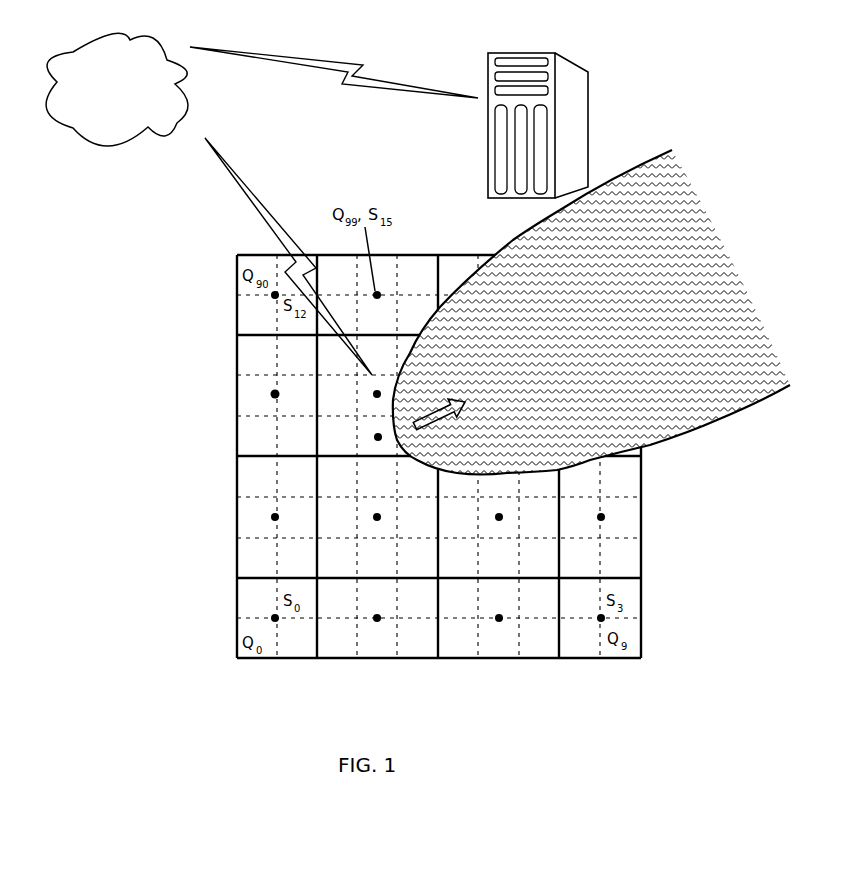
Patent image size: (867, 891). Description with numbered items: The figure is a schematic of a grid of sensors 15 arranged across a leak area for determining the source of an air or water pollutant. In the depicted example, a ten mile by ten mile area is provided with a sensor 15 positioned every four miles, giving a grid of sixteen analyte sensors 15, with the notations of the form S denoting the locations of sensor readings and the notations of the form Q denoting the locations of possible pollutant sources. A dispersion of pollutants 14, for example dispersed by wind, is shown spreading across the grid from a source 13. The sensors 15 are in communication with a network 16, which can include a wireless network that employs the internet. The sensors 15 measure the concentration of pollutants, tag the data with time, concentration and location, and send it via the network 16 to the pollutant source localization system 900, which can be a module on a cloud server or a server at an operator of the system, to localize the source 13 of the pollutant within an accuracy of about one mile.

The source 13 is at (366, 437).
The dispersion of pollutants 14 is at (572, 357).
The sensors 15 is at (275, 394).
The network 16 is at (117, 89).
The pollutant source localization system 900 is at (588, 132).